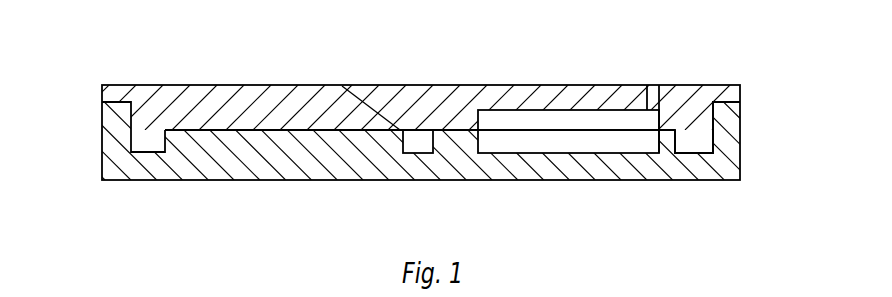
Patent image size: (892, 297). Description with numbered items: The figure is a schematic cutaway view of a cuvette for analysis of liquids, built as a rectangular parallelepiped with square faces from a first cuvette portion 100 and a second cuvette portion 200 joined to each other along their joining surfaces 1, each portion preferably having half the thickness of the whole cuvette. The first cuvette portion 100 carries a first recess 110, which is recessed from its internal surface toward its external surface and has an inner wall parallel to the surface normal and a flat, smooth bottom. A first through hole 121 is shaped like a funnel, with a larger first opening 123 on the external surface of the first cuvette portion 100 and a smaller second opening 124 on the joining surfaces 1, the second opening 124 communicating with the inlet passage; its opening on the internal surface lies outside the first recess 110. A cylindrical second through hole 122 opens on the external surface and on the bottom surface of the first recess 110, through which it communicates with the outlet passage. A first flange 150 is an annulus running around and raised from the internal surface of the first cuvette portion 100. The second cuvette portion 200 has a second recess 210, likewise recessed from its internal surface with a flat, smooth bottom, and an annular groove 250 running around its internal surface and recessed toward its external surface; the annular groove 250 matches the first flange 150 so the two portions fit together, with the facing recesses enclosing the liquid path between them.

The joining surfaces 1 is at (292, 139).
The first cuvette portion 100 is at (190, 97).
The second cuvette portion 200 is at (194, 165).
The first recess 110 is at (602, 118).
The first through hole 121 is at (408, 100).
The second through hole 122 is at (652, 85).
The first opening 123 is at (403, 130).
The second opening 124 is at (427, 130).
The first flange 150 is at (690, 133).
The second recess 210 is at (492, 143).
The annular groove 250 is at (684, 153).